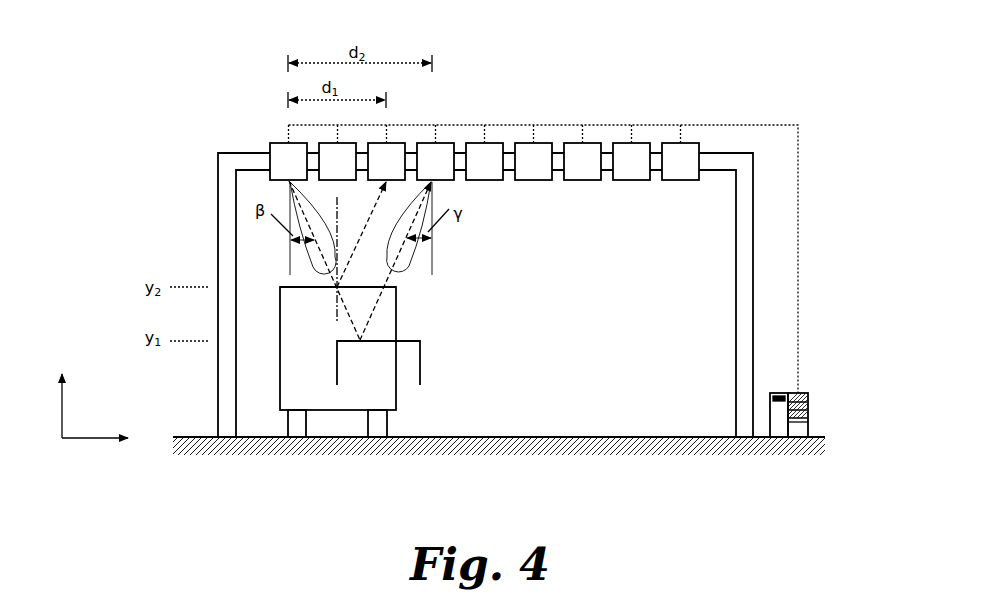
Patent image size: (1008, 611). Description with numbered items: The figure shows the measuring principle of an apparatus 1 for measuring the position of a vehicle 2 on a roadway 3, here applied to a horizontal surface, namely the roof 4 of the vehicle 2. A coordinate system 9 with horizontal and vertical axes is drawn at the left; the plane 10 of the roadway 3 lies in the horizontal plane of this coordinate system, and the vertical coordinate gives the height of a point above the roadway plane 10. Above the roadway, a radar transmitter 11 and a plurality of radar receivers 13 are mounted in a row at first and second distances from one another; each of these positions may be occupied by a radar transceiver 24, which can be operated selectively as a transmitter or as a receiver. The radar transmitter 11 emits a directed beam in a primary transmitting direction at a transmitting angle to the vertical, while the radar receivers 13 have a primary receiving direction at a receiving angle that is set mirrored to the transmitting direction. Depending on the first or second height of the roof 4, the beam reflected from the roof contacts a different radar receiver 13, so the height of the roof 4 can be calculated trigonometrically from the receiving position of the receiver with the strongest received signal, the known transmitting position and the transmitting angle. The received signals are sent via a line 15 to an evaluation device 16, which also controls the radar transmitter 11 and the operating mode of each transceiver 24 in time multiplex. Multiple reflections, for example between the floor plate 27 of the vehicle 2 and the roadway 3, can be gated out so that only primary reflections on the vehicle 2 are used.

The apparatus 1 is at (152, 90).
The vehicle 2 is at (352, 358).
The roadway 3 is at (675, 437).
The roof 4 is at (289, 284).
The coordinate system 9 is at (88, 440).
The plane of the roadway 10 is at (603, 436).
The radar transmitter 11 is at (282, 143).
The radar receivers 13 is at (397, 143).
The line 15 is at (798, 242).
The evaluation device 16 is at (807, 422).
The radar transceiver 24 is at (587, 142).
The floor plate 27 is at (322, 420).